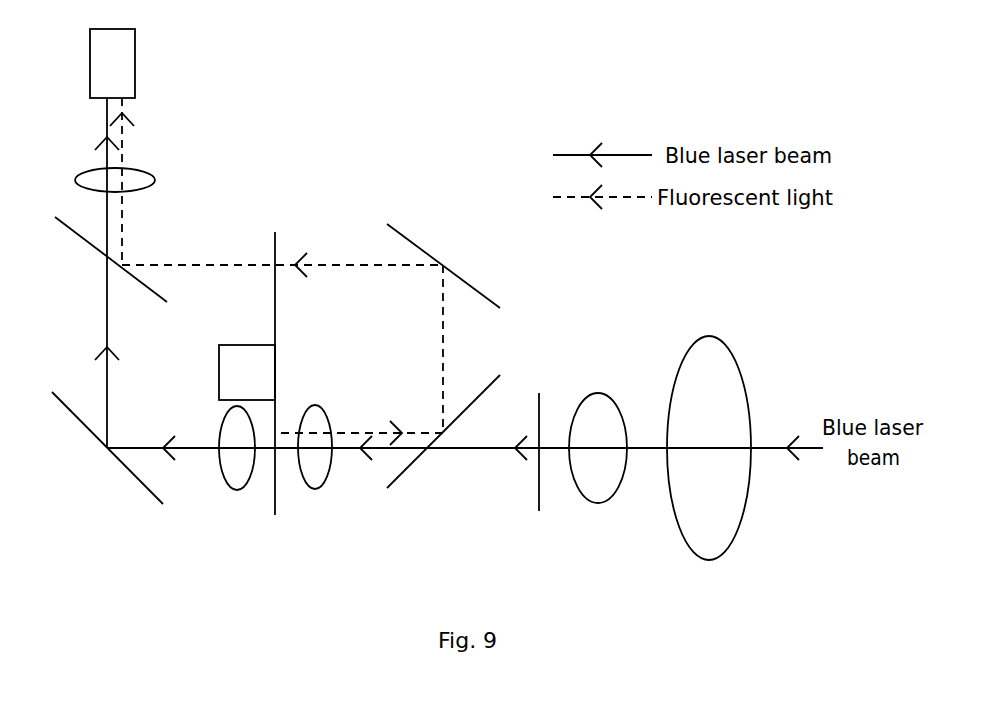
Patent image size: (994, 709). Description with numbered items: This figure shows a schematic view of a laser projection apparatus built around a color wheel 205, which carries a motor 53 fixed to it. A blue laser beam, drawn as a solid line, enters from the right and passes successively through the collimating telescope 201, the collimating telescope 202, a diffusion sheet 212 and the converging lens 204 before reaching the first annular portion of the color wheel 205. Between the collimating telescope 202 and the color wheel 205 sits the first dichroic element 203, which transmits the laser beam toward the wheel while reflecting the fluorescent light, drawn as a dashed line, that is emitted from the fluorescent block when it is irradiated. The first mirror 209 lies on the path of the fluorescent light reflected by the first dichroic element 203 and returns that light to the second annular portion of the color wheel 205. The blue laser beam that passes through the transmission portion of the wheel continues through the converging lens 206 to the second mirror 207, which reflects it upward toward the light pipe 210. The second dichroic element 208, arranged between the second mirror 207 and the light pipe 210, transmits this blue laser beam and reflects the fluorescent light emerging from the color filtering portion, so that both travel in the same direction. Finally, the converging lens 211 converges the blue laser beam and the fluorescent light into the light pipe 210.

The collimating telescope 201 is at (710, 337).
The collimating telescope 202 is at (598, 393).
The first dichroic element 203 is at (408, 468).
The converging lens 204 is at (315, 489).
The color wheel 205 is at (275, 312).
The converging lens 206 is at (237, 490).
The second mirror 207 is at (90, 433).
The second dichroic element 208 is at (92, 245).
The first mirror 209 is at (478, 292).
The light pipe 210 is at (136, 67).
The converging lens 211 is at (155, 176).
The diffusion sheet 212 is at (539, 490).
The motor 53 is at (219, 380).